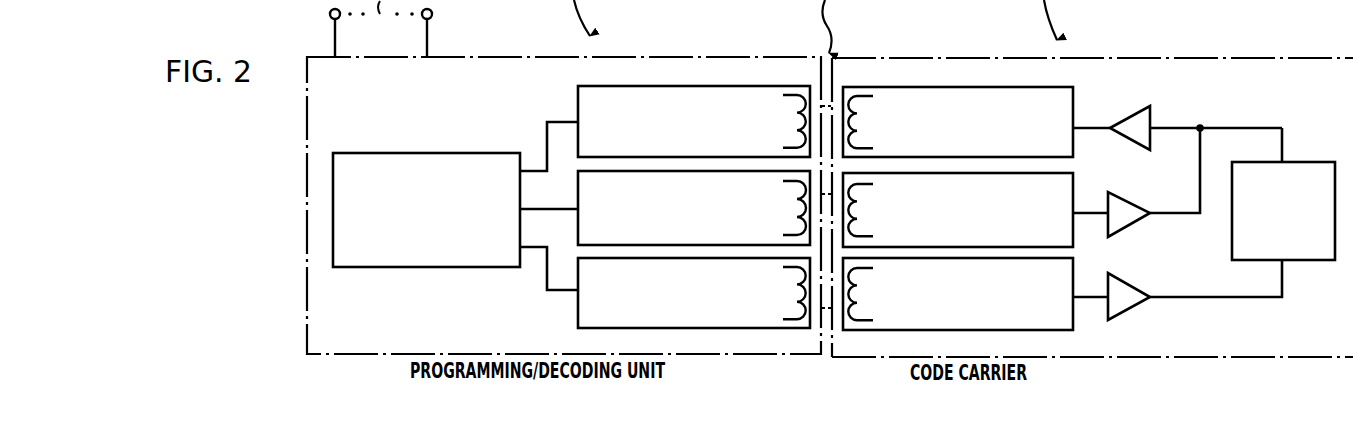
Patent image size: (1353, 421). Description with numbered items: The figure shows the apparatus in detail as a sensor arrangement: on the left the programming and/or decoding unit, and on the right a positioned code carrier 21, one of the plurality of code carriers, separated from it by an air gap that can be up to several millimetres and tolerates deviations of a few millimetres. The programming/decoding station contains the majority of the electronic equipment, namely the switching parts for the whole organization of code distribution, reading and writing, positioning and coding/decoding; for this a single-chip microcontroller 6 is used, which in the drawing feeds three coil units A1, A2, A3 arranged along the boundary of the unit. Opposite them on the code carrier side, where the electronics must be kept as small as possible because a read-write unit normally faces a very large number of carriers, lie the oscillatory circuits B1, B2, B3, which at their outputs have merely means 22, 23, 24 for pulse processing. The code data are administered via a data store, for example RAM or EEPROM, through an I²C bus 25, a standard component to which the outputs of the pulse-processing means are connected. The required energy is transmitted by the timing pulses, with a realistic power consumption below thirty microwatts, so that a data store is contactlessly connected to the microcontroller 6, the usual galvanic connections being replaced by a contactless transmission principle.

The single-chip microcontroller 6 is at (363, 160).
The code carrier 21 is at (1308, 62).
The means for pulse processing 22 is at (1150, 115).
The means for pulse processing 23 is at (1130, 217).
The means for pulse processing 24 is at (1130, 301).
The I²C bus 25 is at (1317, 168).
The transmitting coil unit A1 is at (578, 101).
The transmitting coil unit A2 is at (578, 197).
The transmitting coil unit A3 is at (578, 308).
The oscillatory circuit B1 is at (1073, 104).
The oscillatory circuit B2 is at (1073, 192).
The oscillatory circuit B3 is at (1073, 320).